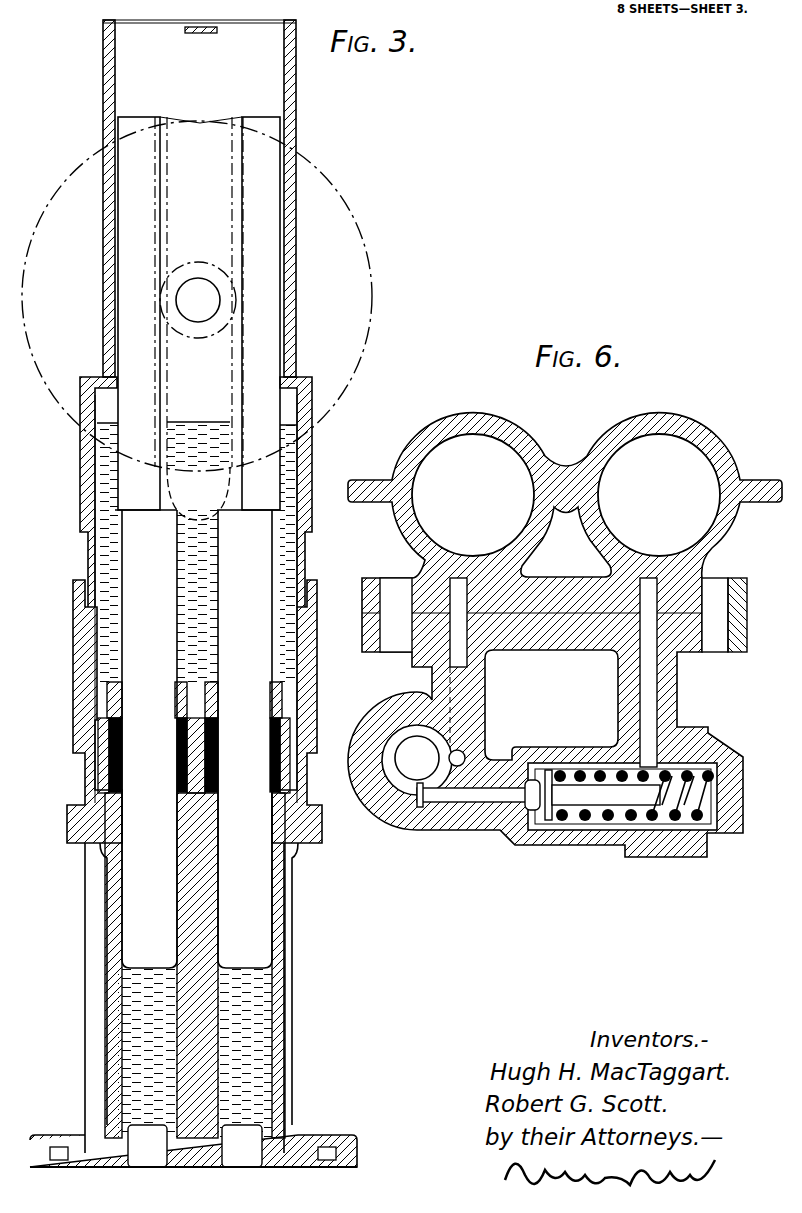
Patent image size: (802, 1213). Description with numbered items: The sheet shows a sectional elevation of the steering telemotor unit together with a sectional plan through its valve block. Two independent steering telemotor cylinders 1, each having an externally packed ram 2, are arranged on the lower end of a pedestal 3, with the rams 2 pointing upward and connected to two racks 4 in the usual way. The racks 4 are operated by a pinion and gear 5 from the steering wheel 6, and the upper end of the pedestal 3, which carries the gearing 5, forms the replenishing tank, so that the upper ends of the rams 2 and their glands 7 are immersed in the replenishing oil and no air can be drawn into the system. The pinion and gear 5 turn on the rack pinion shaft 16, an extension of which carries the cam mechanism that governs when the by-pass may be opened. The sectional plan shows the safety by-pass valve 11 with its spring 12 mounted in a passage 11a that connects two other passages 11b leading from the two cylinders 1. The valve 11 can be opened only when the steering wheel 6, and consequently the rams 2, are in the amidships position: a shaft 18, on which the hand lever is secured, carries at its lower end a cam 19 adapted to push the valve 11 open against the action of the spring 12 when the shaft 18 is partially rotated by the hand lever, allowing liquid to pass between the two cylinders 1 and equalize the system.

In FIG. 3, the steering telemotor cylinder 1 is at (292, 913).
In FIG. 6, the steering telemotor cylinder 1 is at (607, 469).
In FIG. 3, the ram 2 is at (194, 824).
In FIG. 3, the pedestal 3 is at (290, 583).
In FIG. 3, the rack 4 is at (230, 368).
In FIG. 3, the pinion and gear 5 is at (176, 266).
In FIG. 3, the steering wheel 6 is at (371, 250).
In FIG. 3, the gland 7 is at (177, 697).
In FIG. 3, the rack pinion shaft 16 is at (198, 300).
In FIG. 6, the safety by-pass valve 11 is at (531, 773).
In FIG. 6, the passage 11a is at (720, 702).
In FIG. 6, the passage 11b is at (457, 638).
In FIG. 6, the spring 12 is at (603, 821).
In FIG. 6, the shaft 18 is at (417, 758).
In FIG. 6, the cam 19 is at (398, 790).